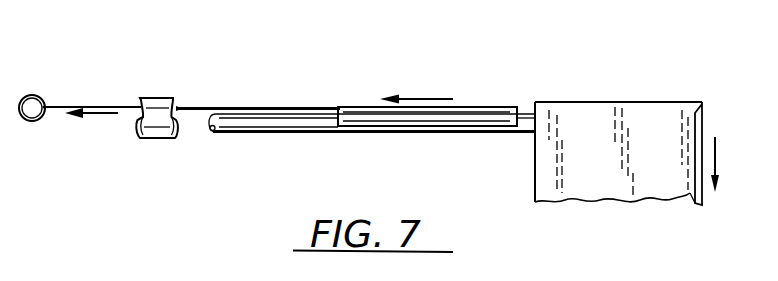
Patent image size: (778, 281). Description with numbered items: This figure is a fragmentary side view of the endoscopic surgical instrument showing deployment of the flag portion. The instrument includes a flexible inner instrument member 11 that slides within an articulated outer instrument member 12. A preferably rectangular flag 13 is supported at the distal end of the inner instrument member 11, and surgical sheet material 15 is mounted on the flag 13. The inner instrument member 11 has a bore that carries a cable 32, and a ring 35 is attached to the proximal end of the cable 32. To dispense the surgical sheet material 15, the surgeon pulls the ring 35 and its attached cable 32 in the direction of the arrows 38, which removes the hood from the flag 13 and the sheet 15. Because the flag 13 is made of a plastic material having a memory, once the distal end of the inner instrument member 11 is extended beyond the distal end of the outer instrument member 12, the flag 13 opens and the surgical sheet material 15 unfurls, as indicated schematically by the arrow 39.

The inner instrument member 11 is at (263, 136).
The outer instrument member 12 is at (165, 97).
The flag 13 is at (535, 163).
The surgical sheet material 15 is at (702, 102).
The cable 32 is at (78, 102).
The ring 35 is at (30, 121).
The arrows 38 is at (103, 120).
The arrow 39 is at (716, 157).